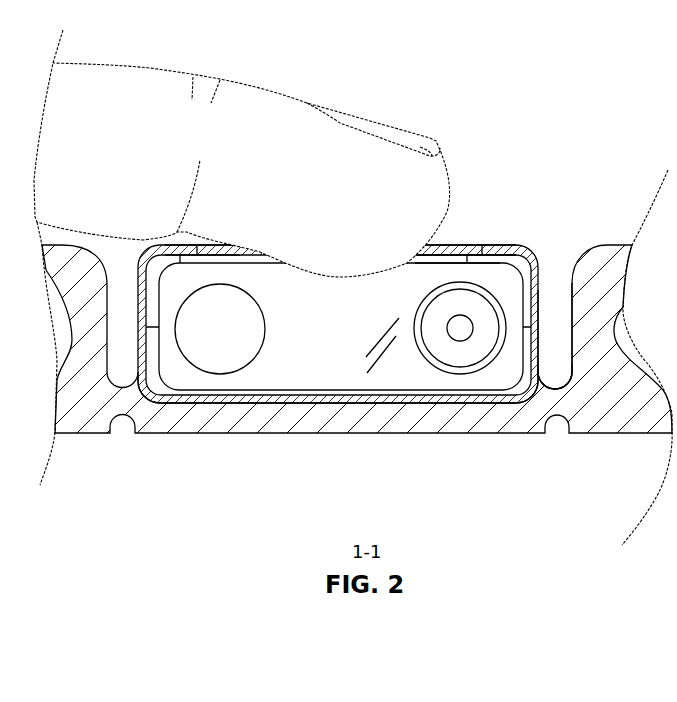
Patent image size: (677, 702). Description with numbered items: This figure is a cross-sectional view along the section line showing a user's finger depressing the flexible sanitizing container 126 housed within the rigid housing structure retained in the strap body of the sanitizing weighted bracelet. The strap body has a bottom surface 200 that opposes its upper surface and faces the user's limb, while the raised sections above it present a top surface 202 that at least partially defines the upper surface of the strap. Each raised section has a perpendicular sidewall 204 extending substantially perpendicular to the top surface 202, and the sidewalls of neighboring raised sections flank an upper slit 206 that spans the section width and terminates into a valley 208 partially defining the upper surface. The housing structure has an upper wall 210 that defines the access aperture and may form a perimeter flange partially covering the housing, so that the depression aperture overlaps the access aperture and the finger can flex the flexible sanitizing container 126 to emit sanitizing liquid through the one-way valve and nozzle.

The flexible sanitizing container 126 is at (308, 370).
The bottom surface 200 is at (217, 438).
The top surface 202 is at (497, 237).
The perpendicular sidewall 204 is at (538, 285).
The upper slit 206 is at (562, 283).
The valley 208 is at (562, 380).
The upper wall 210 is at (480, 257).